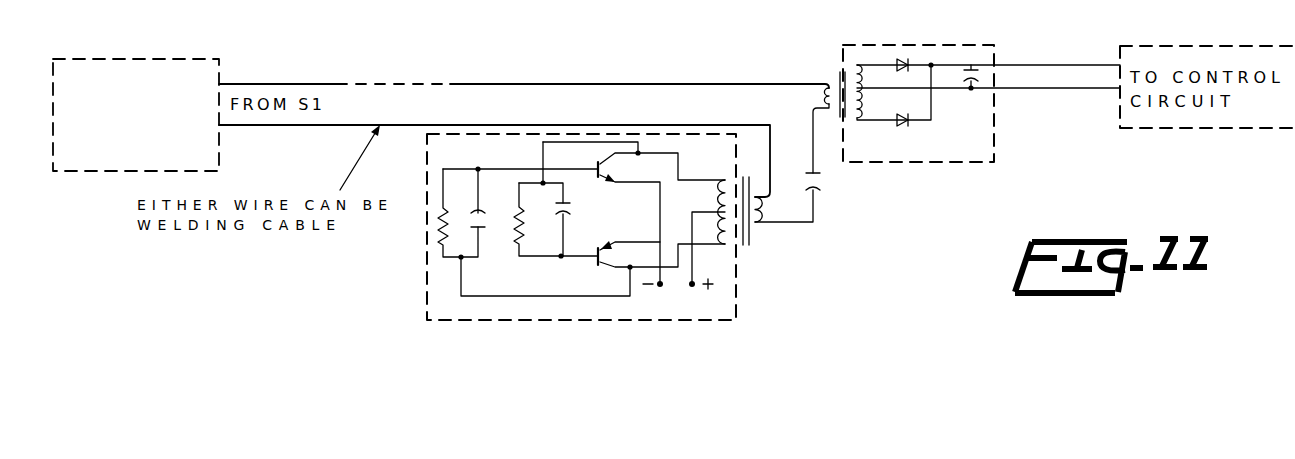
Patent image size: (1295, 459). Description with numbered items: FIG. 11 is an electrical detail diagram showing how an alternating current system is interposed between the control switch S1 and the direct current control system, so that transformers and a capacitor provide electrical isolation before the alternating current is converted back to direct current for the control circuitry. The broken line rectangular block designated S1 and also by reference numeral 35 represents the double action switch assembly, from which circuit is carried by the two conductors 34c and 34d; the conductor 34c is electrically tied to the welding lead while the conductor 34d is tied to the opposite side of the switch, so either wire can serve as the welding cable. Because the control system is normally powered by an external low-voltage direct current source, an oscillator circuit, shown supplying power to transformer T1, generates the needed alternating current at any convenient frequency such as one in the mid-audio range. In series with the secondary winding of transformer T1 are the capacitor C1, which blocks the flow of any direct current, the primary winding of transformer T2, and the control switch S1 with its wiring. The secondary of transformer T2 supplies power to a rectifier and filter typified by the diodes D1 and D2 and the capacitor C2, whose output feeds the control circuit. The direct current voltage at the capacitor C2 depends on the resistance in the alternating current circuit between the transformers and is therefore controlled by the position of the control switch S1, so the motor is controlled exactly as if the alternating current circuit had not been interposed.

The conductor 34d is at (268, 84).
The conductor 34c is at (297, 125).
The double action switch block 35 is at (115, 178).
The control switch S1 is at (136, 115).
The transformer T1 is at (752, 230).
The transformer T2 is at (839, 102).
The capacitor C1 is at (806, 147).
The capacitor C2 is at (965, 89).
The diode D1 is at (889, 73).
The diode D2 is at (889, 110).